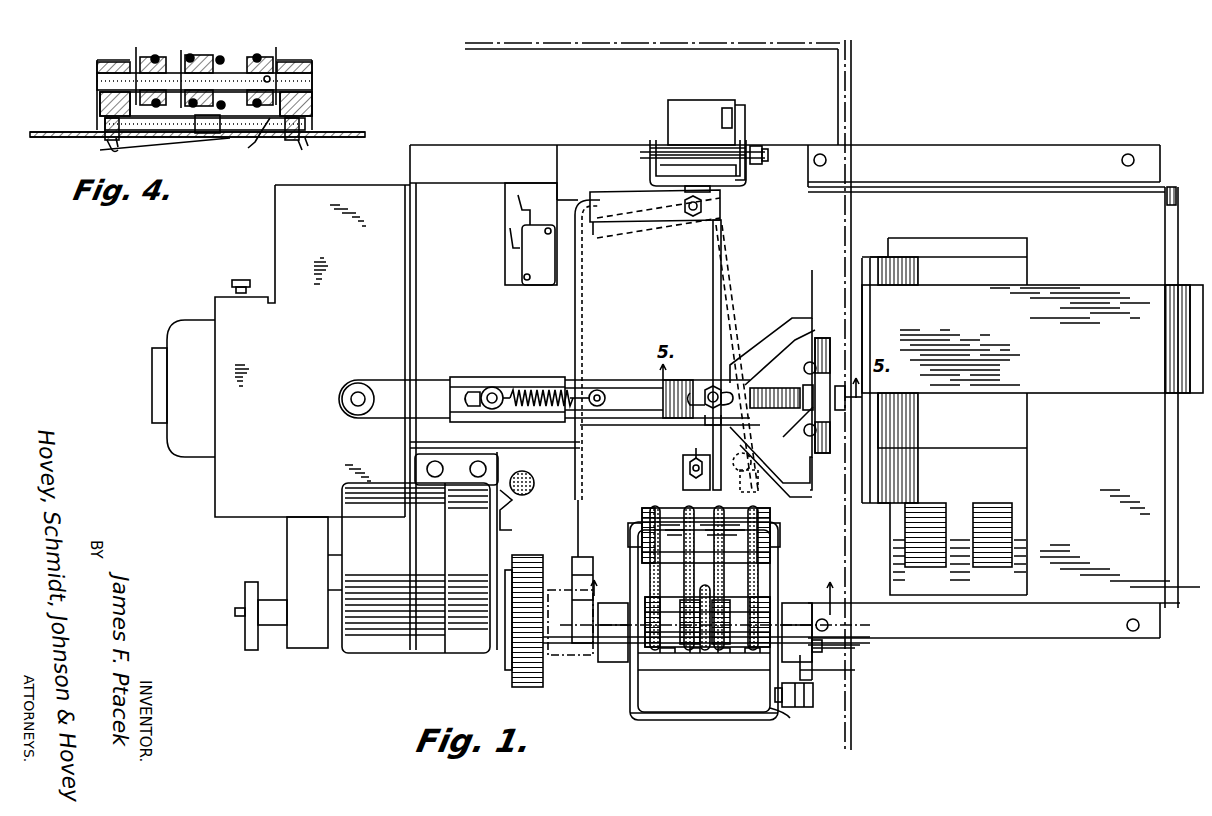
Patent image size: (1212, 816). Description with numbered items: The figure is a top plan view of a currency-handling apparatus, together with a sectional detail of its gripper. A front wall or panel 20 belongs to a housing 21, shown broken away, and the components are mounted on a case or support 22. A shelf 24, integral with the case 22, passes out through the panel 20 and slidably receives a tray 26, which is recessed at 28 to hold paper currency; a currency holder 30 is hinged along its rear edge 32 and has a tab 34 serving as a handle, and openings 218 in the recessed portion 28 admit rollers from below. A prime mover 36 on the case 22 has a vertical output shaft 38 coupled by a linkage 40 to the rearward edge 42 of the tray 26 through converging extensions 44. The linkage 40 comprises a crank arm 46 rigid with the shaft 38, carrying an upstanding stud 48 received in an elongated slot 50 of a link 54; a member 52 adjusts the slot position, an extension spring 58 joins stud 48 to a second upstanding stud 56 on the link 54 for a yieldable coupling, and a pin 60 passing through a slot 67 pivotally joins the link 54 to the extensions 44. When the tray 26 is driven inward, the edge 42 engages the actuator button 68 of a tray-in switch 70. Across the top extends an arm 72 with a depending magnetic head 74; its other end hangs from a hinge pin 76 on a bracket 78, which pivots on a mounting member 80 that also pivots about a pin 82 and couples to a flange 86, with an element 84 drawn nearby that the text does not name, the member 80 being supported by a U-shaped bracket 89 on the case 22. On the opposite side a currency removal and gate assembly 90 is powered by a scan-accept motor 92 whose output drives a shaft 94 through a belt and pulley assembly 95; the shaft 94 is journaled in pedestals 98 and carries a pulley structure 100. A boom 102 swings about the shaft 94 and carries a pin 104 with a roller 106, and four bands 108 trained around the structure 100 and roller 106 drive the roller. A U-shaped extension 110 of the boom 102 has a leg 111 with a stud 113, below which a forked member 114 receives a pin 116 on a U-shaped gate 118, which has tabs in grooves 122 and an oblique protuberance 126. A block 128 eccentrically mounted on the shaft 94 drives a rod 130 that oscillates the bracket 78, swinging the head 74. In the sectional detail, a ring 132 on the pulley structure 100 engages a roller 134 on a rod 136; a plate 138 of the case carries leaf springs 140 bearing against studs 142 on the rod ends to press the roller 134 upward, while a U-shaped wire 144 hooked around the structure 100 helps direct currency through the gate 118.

In FIG. 1, the front wall or panel 20 is at (853, 66).
In FIG. 1, the housing 21 is at (594, 39).
In FIG. 1, the case or support 22 is at (218, 490).
In FIG. 1, the shelf 24 is at (1080, 145).
In FIG. 1, the tray 26 is at (1155, 537).
In FIG. 1, the recess 28 is at (1025, 440).
In FIG. 1, the currency holder 30 is at (1127, 285).
In FIG. 1, the rear edge 32 is at (862, 256).
In FIG. 1, the tab 34 is at (1203, 284).
In FIG. 1, the prime mover 36 is at (200, 320).
In FIG. 1, the output shaft 38 is at (342, 399).
In FIG. 1, the linkage 40 is at (613, 374).
In FIG. 1, the rearward edge 42 is at (812, 290).
In FIG. 1, the extensions 44 is at (770, 338).
In FIG. 1, the crank arm 46 is at (452, 380).
In FIG. 1, the upstanding stud 48 is at (492, 386).
In FIG. 1, the elongated slot 50 is at (470, 408).
In FIG. 1, the member 52 is at (527, 388).
In FIG. 1, the link 54 is at (606, 426).
In FIG. 1, the upstanding stud 56 is at (606, 399).
In FIG. 1, the extension spring 58 is at (545, 412).
In FIG. 1, the pin 60 is at (700, 386).
In FIG. 1, the slot 67 is at (705, 423).
In FIG. 1, the actuator button 68 is at (560, 285).
In FIG. 1, the tray-in switch 70 is at (542, 285).
In FIG. 1, the arm 72 is at (713, 298).
In FIG. 1, the magnetic head 74 is at (664, 480).
In FIG. 1, the hinge pin 76 is at (705, 208).
In FIG. 1, the bracket 78 is at (608, 190).
In FIG. 1, the mounting member 80 is at (748, 180).
In FIG. 1, the pin 82 is at (767, 148).
In FIG. 1, the mounting block 84 is at (722, 112).
In FIG. 1, the flange 86 is at (740, 102).
In FIG. 1, the U-shaped bracket 89 is at (684, 168).
In FIG. 1, the currency removal and gate assembly 90 is at (630, 665).
In FIG. 1, the scan-accept motor 92 is at (388, 640).
In FIG. 4, the shaft 94 is at (305, 78).
In FIG. 1, the shaft 94 is at (560, 590).
In FIG. 1, the belt and pulley assembly 95 is at (510, 662).
In FIG. 4, the pedestals 98 is at (100, 62).
In FIG. 1, the pedestals 98 is at (612, 603).
In FIG. 4, the pulley structure 100 is at (168, 57).
In FIG. 1, the boom 102 is at (770, 562).
In FIG. 1, the pin 104 is at (628, 534).
In FIG. 1, the roller 106 is at (745, 503).
In FIG. 4, the bands 108 is at (155, 55).
In FIG. 1, the bands 108 is at (676, 600).
In FIG. 1, the U-shaped extension 110 is at (710, 715).
In FIG. 1, the leg 111 is at (785, 718).
In FIG. 1, the stud 113 is at (800, 698).
In FIG. 1, the forked member 114 is at (825, 672).
In FIG. 1, the pin 116 is at (825, 648).
In FIG. 1, the U-shaped gate 118 is at (640, 680).
In FIG. 1, the grooves 122 is at (740, 655).
In FIG. 1, the protuberance 126 is at (705, 655).
In FIG. 1, the block 128 is at (572, 643).
In FIG. 1, the rod 130 is at (585, 306).
In FIG. 4, the ring 132 is at (200, 50).
In FIG. 1, the ring 132 is at (688, 655).
In FIG. 4, the roller 134 is at (210, 138).
In FIG. 4, the rod 136 is at (312, 105).
In FIG. 4, the plate 138 is at (78, 140).
In FIG. 4, the leaf springs 140 is at (128, 140).
In FIG. 4, the studs 142 is at (104, 122).
In FIG. 4, the U-shaped wire 144 is at (258, 144).
In FIG. 1, the openings 218 is at (922, 568).